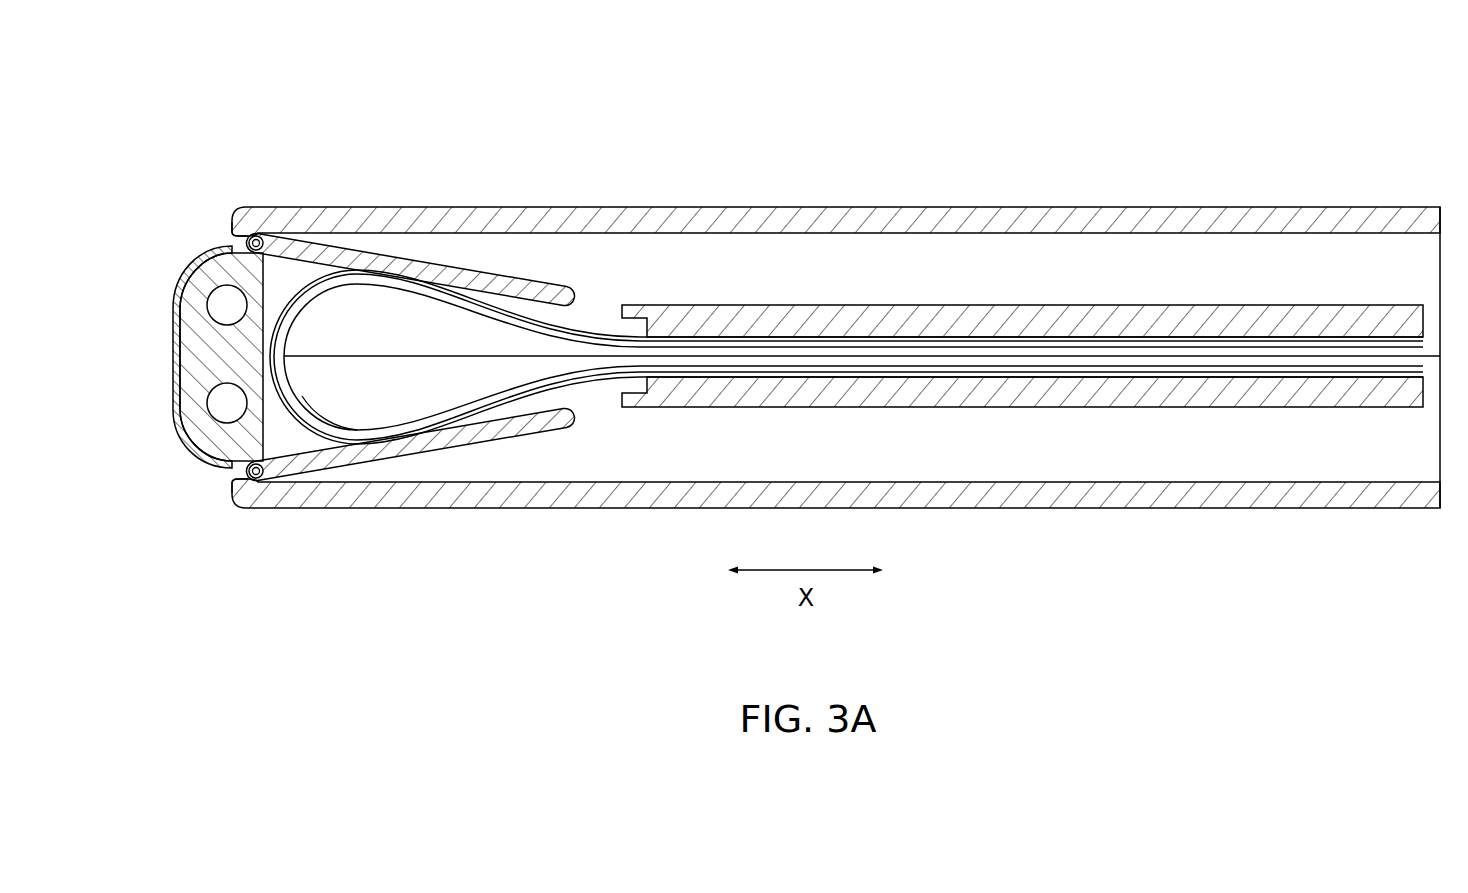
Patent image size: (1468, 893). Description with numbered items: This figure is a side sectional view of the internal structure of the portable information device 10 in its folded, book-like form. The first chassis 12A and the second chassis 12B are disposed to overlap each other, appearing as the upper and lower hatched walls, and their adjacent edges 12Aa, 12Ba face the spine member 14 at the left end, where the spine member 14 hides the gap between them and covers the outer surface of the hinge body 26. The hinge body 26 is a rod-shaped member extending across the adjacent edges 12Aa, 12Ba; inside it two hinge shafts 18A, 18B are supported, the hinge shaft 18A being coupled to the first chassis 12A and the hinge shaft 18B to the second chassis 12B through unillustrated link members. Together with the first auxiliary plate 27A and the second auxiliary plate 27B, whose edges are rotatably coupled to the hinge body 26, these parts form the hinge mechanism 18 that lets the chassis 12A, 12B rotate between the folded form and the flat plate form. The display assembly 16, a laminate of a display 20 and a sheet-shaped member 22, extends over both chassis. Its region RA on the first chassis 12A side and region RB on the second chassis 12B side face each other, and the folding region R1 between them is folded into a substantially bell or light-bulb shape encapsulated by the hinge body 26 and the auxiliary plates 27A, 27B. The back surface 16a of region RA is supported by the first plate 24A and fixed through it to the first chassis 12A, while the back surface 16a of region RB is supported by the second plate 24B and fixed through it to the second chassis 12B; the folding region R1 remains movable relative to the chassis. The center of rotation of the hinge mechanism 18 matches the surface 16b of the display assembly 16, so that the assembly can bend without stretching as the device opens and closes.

The portable information device 10 is at (178, 83).
The first chassis 12A is at (823, 153).
The adjacent edge 12Aa is at (232, 213).
The second chassis 12B is at (823, 542).
The adjacent edge 12Ba is at (232, 498).
The spine member 14 is at (187, 266).
The display assembly 16 is at (601, 320).
The back surface 16a is at (1053, 337).
The surface 16b is at (296, 394).
The hinge mechanism 18 is at (168, 393).
The hinge shaft 18A is at (227, 306).
The hinge shaft 18B is at (227, 403).
The display 20 is at (467, 405).
The sheet-shaped member 22 is at (533, 327).
The first plate 24A is at (1123, 320).
The second plate 24B is at (1060, 395).
The hinge body 26 is at (213, 350).
The first auxiliary plate 27A is at (462, 270).
The second auxiliary plate 27B is at (535, 422).
The folding region R1 is at (314, 445).
The region RA is at (922, 322).
The region RB is at (922, 393).